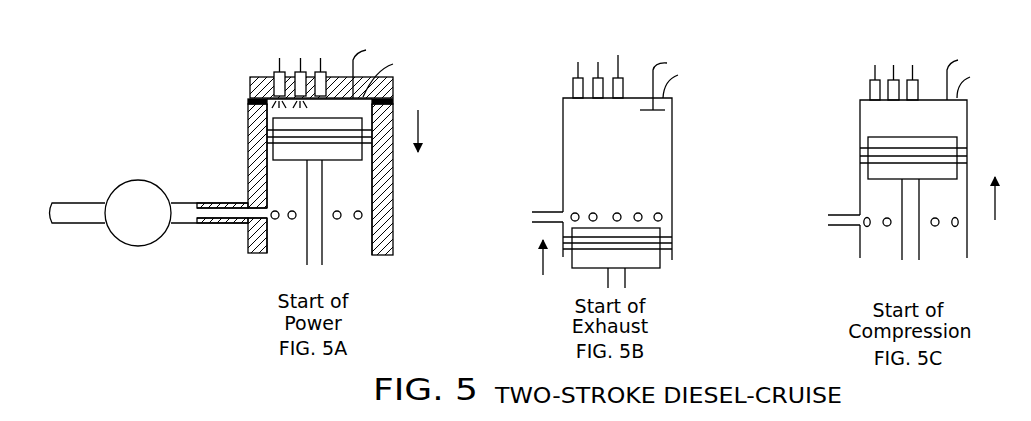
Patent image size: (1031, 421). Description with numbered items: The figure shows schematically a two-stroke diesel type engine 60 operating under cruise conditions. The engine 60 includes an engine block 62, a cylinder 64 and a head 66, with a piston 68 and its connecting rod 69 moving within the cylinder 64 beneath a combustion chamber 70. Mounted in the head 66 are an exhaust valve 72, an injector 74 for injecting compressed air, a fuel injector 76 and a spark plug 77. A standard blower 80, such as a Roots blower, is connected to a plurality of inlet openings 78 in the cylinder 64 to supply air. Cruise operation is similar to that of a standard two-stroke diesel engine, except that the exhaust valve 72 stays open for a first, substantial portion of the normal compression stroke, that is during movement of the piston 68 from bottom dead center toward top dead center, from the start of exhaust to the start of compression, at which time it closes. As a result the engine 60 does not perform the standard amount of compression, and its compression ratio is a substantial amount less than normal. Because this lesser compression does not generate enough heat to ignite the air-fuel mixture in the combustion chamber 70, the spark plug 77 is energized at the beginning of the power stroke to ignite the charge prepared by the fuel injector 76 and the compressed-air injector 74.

The diesel engine 60 is at (243, 83).
The engine block 62 is at (370, 173).
The cylinder 64 is at (388, 198).
The head 66 is at (396, 97).
The piston 68 is at (272, 147).
The connecting rod 69 is at (320, 245).
The combustion chamber 70 is at (262, 117).
The exhaust valve 72 is at (356, 78).
The injector for injecting compressed air 74 is at (326, 72).
The fuel injector 76 is at (301, 72).
The spark plug 77 is at (277, 73).
The inlet openings 78 is at (378, 218).
The blower 80 is at (124, 182).